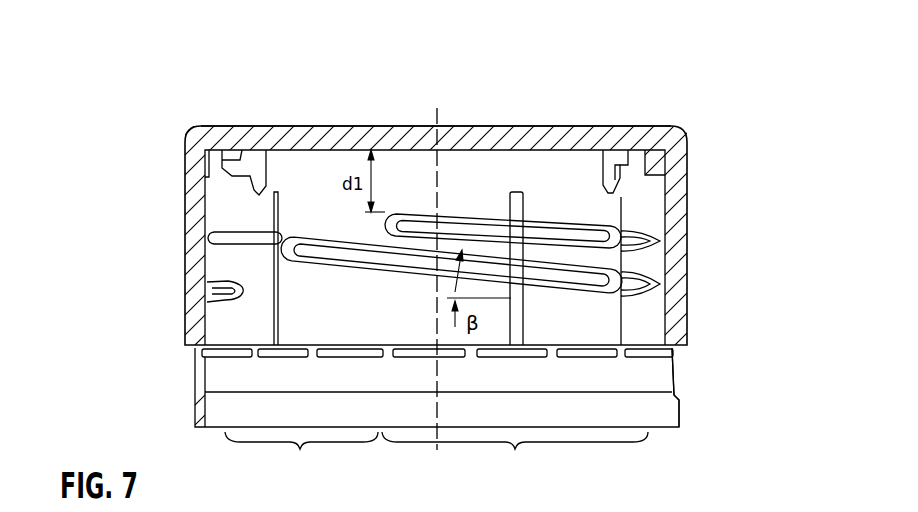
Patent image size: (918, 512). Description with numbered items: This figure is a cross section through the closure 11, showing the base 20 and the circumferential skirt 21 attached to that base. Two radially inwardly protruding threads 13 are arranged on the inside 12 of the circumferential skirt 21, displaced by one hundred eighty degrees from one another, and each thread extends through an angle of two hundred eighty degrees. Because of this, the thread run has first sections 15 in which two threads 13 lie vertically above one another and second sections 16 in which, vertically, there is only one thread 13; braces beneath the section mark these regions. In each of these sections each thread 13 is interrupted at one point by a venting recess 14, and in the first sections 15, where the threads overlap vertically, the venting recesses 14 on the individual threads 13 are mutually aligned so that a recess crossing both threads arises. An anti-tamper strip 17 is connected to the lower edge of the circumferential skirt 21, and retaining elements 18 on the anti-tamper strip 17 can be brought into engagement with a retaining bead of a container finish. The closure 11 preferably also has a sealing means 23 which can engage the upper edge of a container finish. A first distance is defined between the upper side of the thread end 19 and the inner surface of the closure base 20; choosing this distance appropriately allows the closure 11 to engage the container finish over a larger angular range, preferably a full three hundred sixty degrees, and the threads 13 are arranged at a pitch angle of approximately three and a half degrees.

The closure 11 is at (197, 213).
The inside 12 is at (205, 188).
The threads 13 is at (600, 243).
The venting recess 14 is at (517, 220).
The first sections 15 is at (527, 416).
The second sections 16 is at (292, 416).
The anti-tamper strip 17 is at (227, 375).
The retaining elements 18 is at (670, 403).
The thread end 19 is at (431, 212).
The base 20 is at (501, 138).
The circumferential skirt 21 is at (668, 173).
The sealing means 23 is at (263, 172).